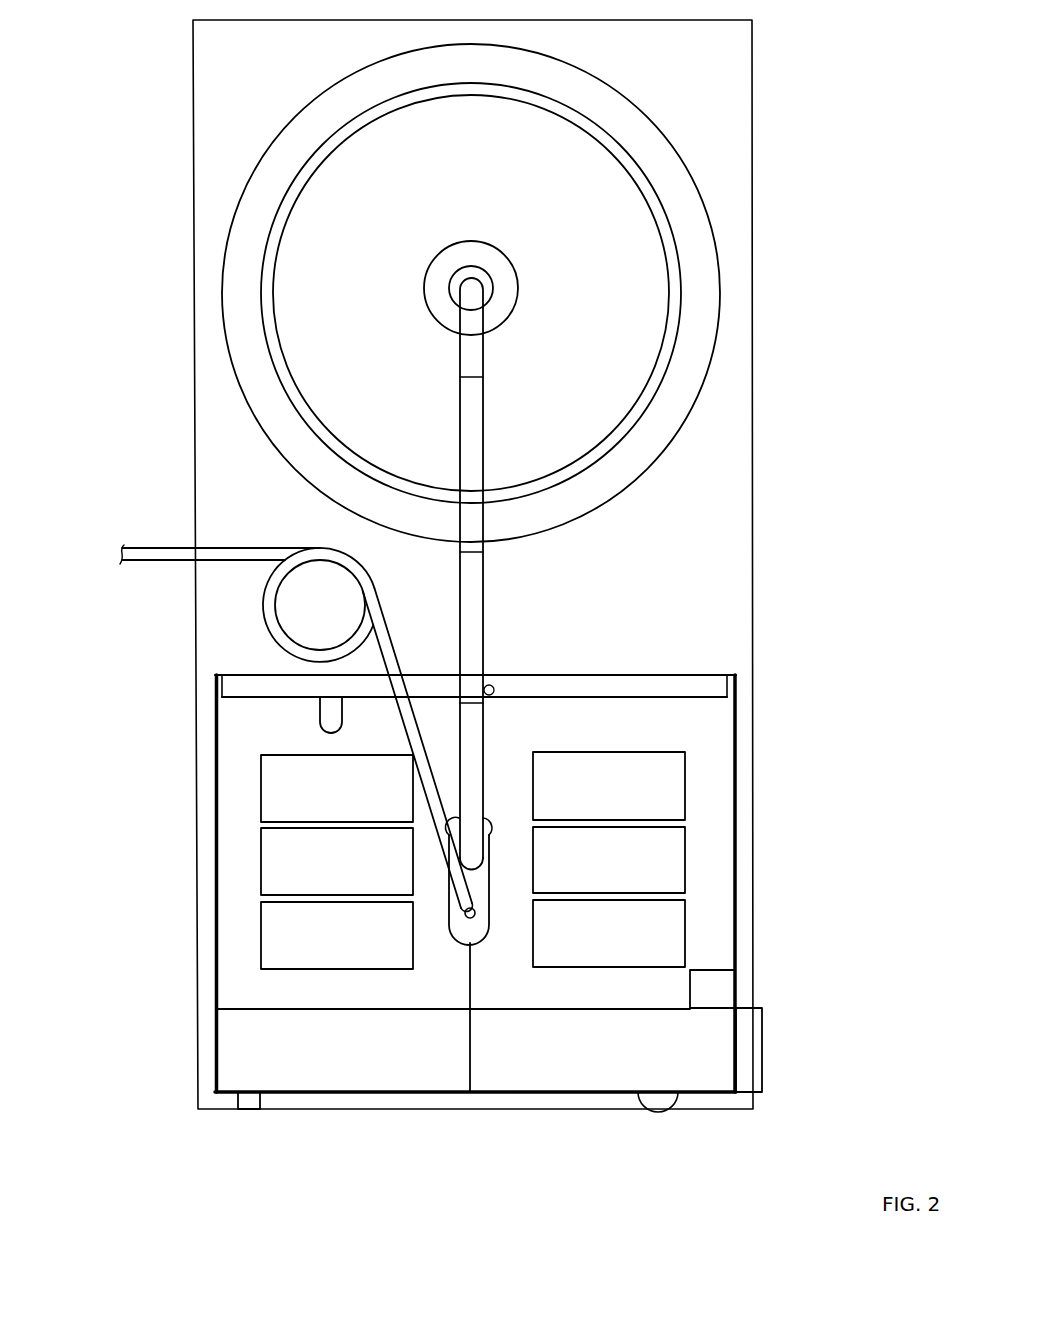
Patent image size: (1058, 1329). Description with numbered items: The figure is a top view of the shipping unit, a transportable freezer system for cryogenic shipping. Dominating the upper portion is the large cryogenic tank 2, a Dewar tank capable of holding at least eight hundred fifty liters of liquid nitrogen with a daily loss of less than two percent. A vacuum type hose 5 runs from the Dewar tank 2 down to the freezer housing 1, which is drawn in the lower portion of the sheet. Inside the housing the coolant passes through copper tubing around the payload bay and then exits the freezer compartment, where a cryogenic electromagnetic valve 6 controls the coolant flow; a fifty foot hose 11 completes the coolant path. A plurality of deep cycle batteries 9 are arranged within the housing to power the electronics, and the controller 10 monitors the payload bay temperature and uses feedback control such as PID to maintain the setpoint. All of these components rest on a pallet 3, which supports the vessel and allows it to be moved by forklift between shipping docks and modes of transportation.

The freezer housing 1 is at (238, 985).
The cryogenic tank 2 is at (317, 122).
The pallet 3 is at (232, 517).
The vacuum type hose 5 is at (475, 592).
The cryogenic electromagnetic valve 6 is at (470, 913).
The deep cycle batteries 9 is at (612, 937).
The controller 10 is at (342, 1052).
The hose 11 is at (265, 615).